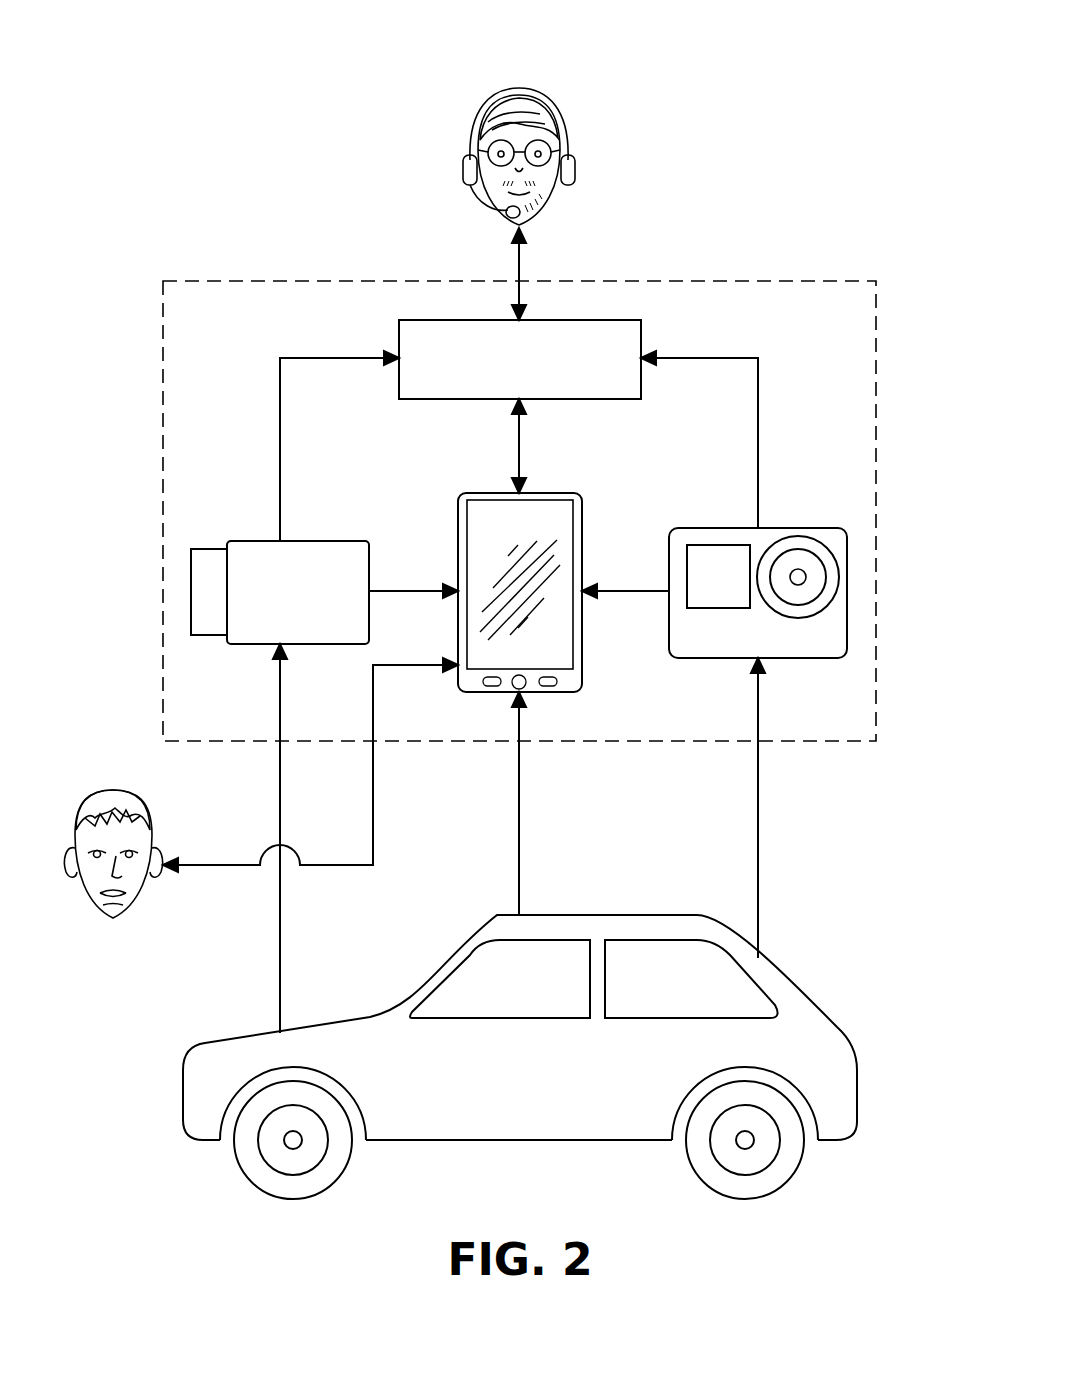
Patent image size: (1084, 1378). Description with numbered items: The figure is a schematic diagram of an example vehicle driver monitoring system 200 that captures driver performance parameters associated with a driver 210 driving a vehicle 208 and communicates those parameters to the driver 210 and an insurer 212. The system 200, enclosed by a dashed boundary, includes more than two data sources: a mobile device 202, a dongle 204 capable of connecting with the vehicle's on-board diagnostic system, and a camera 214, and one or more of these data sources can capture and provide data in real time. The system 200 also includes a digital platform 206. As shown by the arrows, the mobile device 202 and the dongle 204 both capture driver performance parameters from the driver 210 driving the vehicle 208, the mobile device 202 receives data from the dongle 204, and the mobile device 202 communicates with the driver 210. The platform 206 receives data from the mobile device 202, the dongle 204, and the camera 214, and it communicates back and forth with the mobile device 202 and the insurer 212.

The vehicle driver monitoring system 200 is at (792, 280).
The mobile device 202 is at (458, 524).
The dongle 204 is at (258, 541).
The digital platform 206 is at (602, 400).
The vehicle 208 is at (857, 1076).
The driver 210 is at (95, 789).
The insurer 212 is at (507, 93).
The camera 214 is at (803, 527).